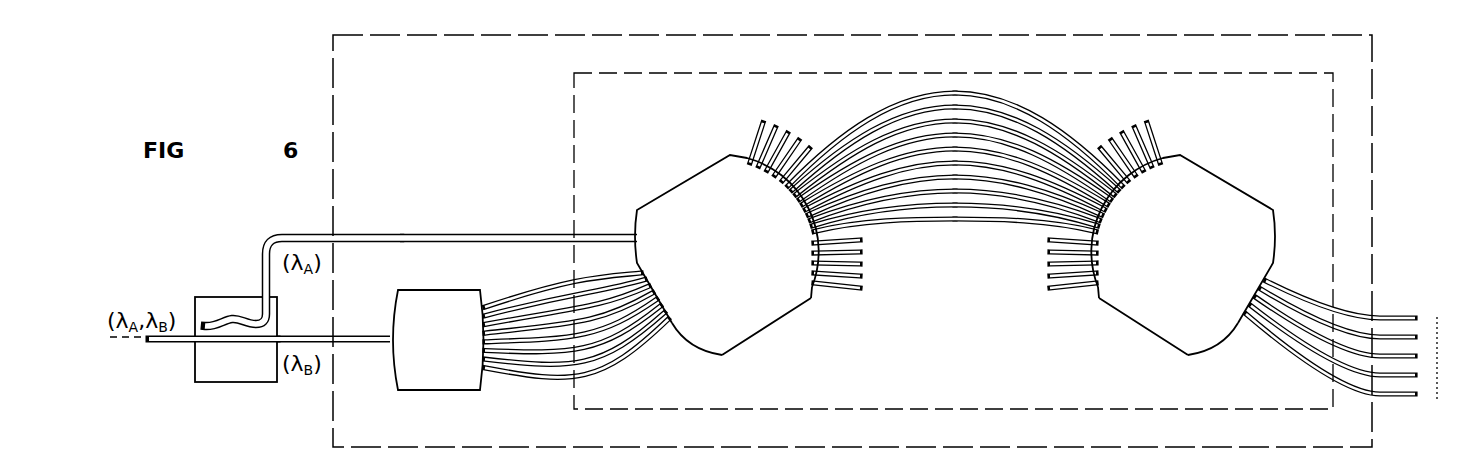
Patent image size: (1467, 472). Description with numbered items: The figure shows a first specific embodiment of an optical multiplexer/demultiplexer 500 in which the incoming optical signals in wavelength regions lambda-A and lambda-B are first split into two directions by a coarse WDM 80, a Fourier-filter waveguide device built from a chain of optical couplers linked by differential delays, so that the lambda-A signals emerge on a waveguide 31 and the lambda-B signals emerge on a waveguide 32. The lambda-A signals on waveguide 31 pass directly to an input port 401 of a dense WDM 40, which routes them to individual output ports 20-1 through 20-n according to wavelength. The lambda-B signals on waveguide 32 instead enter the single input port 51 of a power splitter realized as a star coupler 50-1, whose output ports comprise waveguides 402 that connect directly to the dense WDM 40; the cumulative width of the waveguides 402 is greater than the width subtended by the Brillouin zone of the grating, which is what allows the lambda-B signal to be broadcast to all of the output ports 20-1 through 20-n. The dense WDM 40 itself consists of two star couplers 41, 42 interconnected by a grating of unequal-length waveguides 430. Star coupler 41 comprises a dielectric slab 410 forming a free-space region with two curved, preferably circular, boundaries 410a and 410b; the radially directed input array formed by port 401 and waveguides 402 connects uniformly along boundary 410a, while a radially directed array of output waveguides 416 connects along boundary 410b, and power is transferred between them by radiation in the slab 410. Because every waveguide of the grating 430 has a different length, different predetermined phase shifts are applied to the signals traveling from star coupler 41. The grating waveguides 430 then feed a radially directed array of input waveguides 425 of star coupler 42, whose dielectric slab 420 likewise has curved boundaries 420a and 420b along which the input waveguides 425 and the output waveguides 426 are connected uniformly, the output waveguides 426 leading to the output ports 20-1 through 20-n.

The optical multiplexer/demultiplexer 500 is at (332, 62).
The dense WDM 40 is at (568, 152).
The star coupler 41 is at (684, 180).
The star coupler 42 is at (1228, 180).
The dielectric slab 410 is at (756, 276).
The curved boundary 410a is at (693, 346).
The curved boundary 410b is at (823, 297).
The dielectric slab 420 is at (1156, 275).
The curved boundary 420a is at (1085, 297).
The curved boundary 420b is at (1225, 340).
The output waveguides 416 is at (870, 265).
The input waveguides 425 is at (1033, 267).
The unequal-length waveguides 430 is at (1018, 233).
The output waveguides 426 is at (1351, 326).
The input port 401 is at (520, 233).
The input port waveguides 402 is at (520, 287).
The waveguide 31 is at (322, 233).
The waveguide 32 is at (322, 334).
The input port 51 is at (378, 334).
The star coupler 50-1 is at (457, 350).
The coarse WDM 80 is at (237, 295).
The output port 20-1 is at (1395, 313).
The output port 20-n is at (1395, 398).